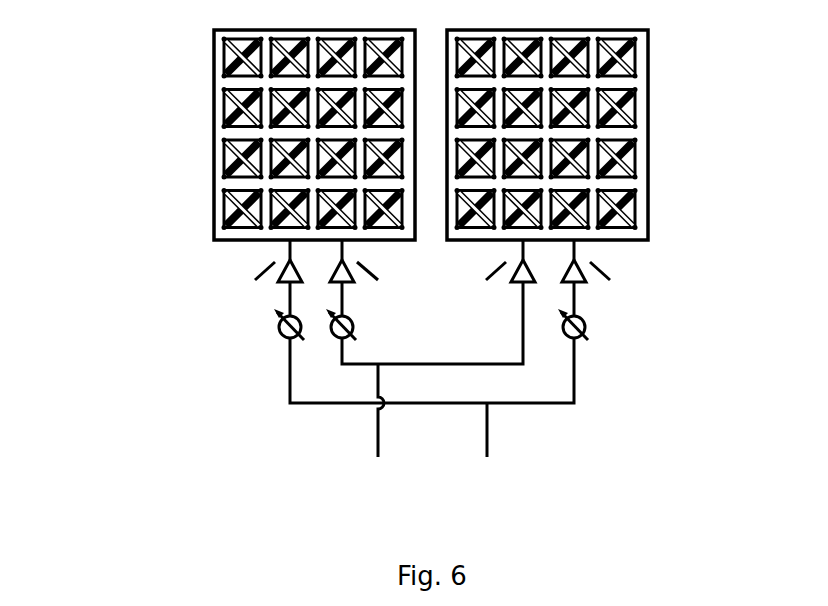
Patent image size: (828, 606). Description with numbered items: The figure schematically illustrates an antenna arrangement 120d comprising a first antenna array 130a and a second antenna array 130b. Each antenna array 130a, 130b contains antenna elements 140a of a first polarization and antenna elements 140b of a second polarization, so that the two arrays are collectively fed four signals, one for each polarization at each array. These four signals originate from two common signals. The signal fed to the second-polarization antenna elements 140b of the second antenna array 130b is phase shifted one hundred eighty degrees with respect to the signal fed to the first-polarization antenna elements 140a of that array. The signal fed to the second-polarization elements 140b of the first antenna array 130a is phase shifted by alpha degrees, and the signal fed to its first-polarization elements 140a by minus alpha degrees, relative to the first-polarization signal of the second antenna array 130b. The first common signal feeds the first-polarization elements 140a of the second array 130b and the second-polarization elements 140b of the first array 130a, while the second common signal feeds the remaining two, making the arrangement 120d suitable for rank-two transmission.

The antenna arrangement 120d is at (118, 358).
The first antenna array 130a is at (214, 190).
The second antenna array 130b is at (648, 190).
The antenna elements of a first polarization 140a is at (225, 112).
The antenna elements of a second polarization 140b is at (225, 55).